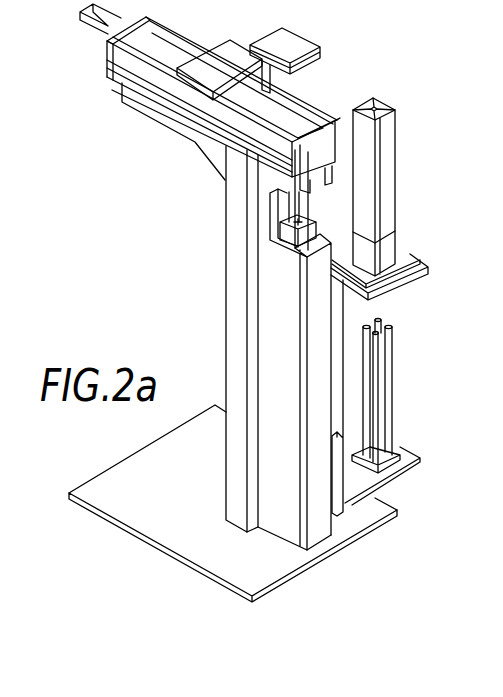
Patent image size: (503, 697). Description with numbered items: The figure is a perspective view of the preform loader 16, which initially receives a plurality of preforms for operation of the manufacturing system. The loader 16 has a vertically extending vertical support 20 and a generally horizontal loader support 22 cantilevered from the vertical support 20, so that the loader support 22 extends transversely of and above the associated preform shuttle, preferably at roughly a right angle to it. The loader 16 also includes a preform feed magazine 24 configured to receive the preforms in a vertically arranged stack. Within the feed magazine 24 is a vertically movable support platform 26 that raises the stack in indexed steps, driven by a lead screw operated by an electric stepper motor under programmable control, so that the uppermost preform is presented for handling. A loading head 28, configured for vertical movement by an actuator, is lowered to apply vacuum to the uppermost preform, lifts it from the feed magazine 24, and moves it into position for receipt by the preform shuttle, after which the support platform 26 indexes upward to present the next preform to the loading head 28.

The preform loader 16 is at (409, 84).
The vertical support 20 is at (225, 303).
The loader support 22 is at (113, 82).
The preform feed magazine 24 is at (397, 167).
The support platform 26 is at (390, 381).
The loading head 28 is at (322, 31).